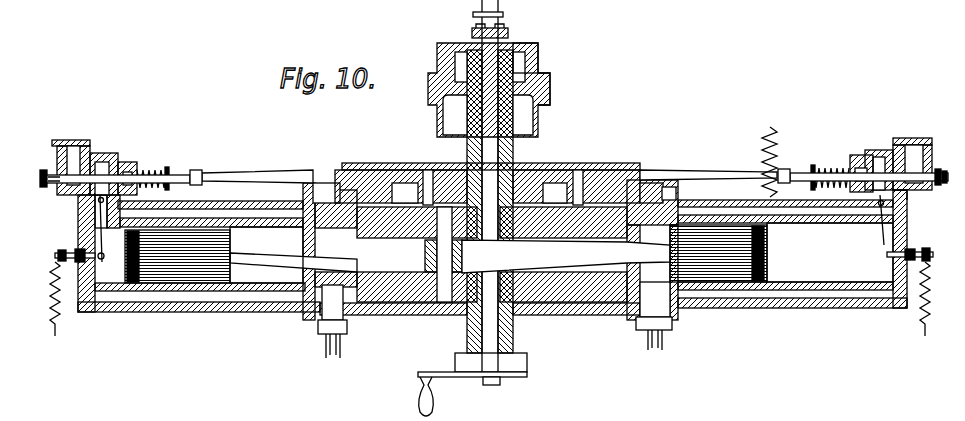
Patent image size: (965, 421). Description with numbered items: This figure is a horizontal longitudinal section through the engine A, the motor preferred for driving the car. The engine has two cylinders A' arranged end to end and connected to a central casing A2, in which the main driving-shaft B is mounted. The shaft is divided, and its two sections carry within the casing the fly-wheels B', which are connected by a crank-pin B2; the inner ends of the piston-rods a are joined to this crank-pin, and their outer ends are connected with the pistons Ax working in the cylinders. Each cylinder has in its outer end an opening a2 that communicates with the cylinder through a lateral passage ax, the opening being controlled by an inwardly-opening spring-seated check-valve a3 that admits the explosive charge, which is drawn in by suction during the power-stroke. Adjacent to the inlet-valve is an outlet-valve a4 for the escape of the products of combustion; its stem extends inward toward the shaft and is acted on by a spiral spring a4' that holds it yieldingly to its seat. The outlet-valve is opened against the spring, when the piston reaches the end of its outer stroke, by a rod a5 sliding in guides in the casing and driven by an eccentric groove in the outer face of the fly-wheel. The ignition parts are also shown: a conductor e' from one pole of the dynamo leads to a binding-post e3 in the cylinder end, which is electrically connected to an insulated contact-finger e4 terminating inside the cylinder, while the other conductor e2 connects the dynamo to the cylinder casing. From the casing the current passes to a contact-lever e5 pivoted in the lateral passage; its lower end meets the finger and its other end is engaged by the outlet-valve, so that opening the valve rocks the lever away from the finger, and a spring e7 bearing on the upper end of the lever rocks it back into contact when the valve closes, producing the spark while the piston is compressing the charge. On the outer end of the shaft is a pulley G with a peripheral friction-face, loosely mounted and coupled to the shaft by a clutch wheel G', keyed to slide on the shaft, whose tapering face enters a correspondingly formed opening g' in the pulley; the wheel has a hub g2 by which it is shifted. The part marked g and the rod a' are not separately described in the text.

The engine A is at (492, 221).
The cylinder A' is at (561, 253).
The central casing A2 is at (445, 341).
The piston Ax is at (446, 254).
The main driving-shaft B is at (506, 186).
The fly-wheel B' is at (495, 282).
The crank-pin B2 is at (440, 254).
The pulley G is at (560, 91).
The clutch wheel G' is at (489, 77).
The top plate g is at (479, 9).
The tapering opening g' is at (540, 52).
The hub g2 is at (510, 36).
The piston-rod a is at (450, 257).
The adjusting rod a' is at (485, 185).
The opening a2 is at (492, 157).
The check-valve a3 is at (100, 160).
The outlet-valve a4 is at (495, 167).
The spiral spring a4' is at (493, 164).
The valve rod a5 is at (720, 172).
The lateral passage ax is at (908, 190).
The conductor e' is at (491, 299).
The conductor e2 is at (771, 151).
The binding-post e3 is at (58, 254).
The contact-finger e4 is at (110, 230).
The contact-lever e5 is at (878, 240).
The spring e7 is at (95, 201).